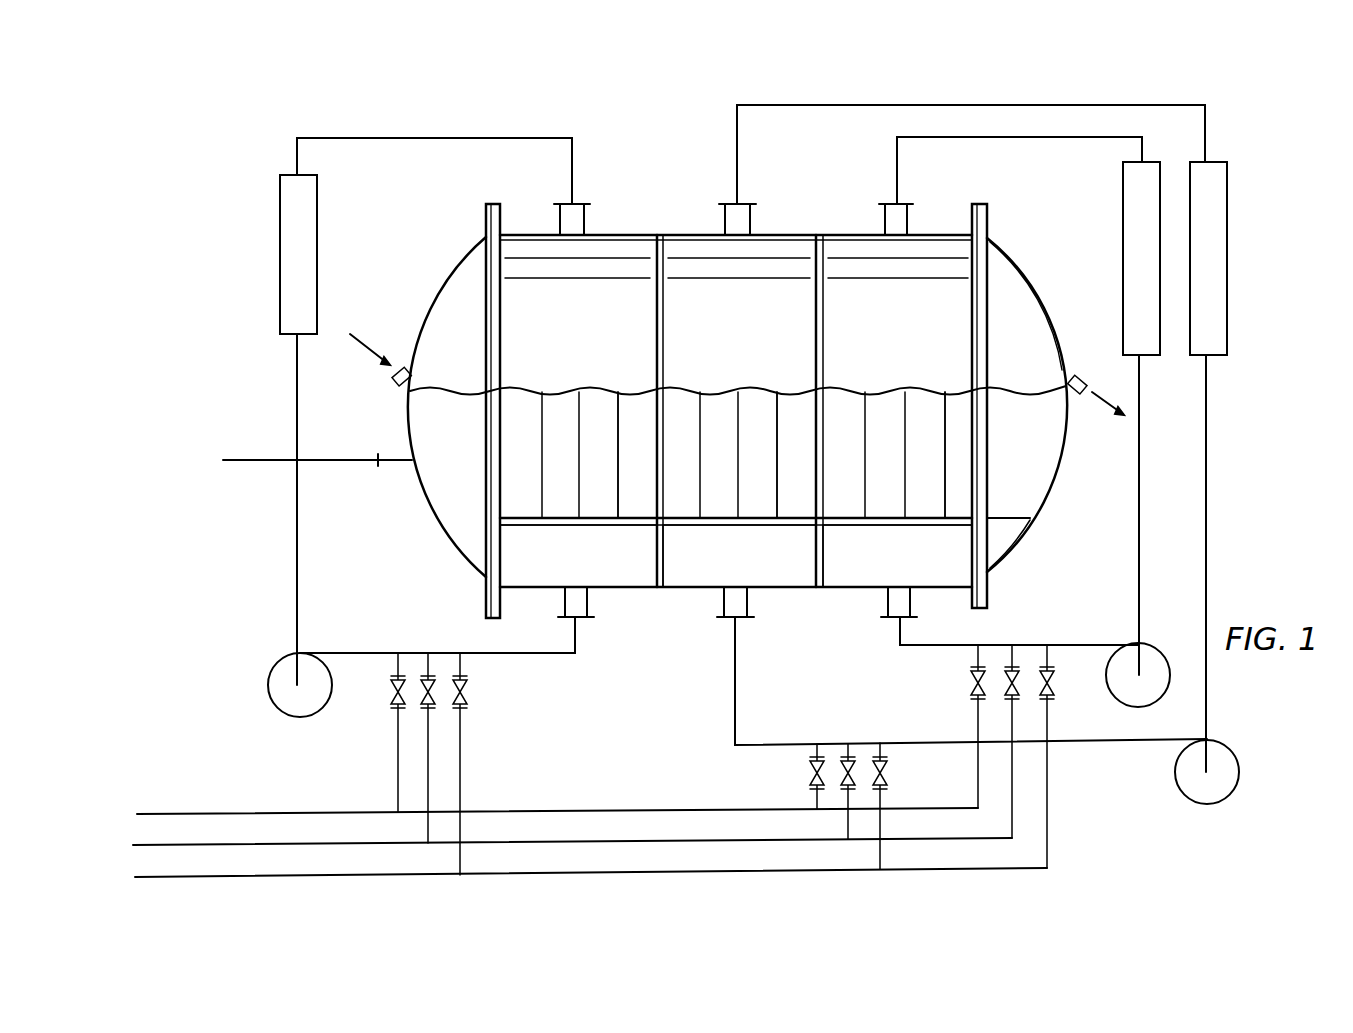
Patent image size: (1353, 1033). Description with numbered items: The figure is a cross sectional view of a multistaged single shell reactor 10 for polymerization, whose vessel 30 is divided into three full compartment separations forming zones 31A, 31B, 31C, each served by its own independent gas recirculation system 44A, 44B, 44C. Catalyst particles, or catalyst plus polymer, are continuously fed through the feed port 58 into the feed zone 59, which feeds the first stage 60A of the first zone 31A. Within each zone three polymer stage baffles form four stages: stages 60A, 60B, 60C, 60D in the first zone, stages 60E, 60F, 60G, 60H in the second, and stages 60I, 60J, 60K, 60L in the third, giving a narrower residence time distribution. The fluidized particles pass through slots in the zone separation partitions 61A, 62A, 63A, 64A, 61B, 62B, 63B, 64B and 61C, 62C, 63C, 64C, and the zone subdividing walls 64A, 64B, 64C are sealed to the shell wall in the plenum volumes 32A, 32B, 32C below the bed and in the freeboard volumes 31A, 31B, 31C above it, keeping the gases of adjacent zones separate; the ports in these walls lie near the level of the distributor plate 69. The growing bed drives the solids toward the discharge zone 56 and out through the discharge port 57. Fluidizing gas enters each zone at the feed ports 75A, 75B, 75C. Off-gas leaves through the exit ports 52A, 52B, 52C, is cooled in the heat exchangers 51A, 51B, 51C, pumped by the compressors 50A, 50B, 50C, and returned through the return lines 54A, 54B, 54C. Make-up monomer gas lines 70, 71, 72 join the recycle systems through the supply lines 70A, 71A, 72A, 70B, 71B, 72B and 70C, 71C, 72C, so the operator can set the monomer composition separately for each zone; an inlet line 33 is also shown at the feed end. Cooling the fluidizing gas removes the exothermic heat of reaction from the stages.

The single shell reactor 10 is at (200, 310).
The vessel 30 is at (432, 302).
The first zone 31A is at (548, 331).
The second zone 31B is at (706, 331).
The third zone 31C is at (874, 331).
The plenum volume 32A is at (548, 566).
The plenum volume 32B is at (726, 566).
The plenum volume 32C is at (874, 566).
The inlet line 33 is at (234, 458).
The gas recirculation system 44A is at (295, 161).
The gas recirculation system 44B is at (810, 105).
The gas recirculation system 44C is at (1145, 518).
The compressor 50A is at (276, 682).
The compressor 50B is at (1124, 685).
The compressor 50C is at (1180, 768).
The heat exchanger 51A is at (280, 237).
The heat exchanger 51B is at (1227, 294).
The heat exchanger 51C is at (1123, 228).
The exit port 52A is at (586, 218).
The exit port 52B is at (750, 214).
The exit port 52C is at (907, 214).
The return line A 54A is at (412, 138).
The return line B 54B is at (908, 108).
The return line C 54C is at (1054, 137).
The discharge zone 56 is at (1007, 439).
The discharge port 57 is at (1080, 400).
The feed port 58 is at (397, 383).
The feed zone 59 is at (434, 434).
The first stage 60A is at (507, 426).
The reaction stage 60B is at (546, 426).
The reaction stage 60C is at (584, 426).
The reaction stage 60D is at (623, 426).
The reaction stage 60E is at (667, 426).
The reaction stage 60F is at (705, 426).
The reaction stage 60G is at (744, 426).
The reaction stage 60H is at (783, 426).
The reaction stage 60I is at (830, 426).
The reaction stage 60J is at (871, 426).
The reaction stage 60K is at (911, 426).
The reaction stage 60L is at (946, 426).
The separation partition 61A is at (538, 477).
The separation partition 62A is at (577, 477).
The separation partition 63A is at (615, 477).
The zone subdividing wall 64A is at (654, 477).
The separation partition 61B is at (698, 477).
The separation partition 62B is at (736, 477).
The separation partition 63B is at (775, 477).
The zone subdividing wall 64B is at (814, 477).
The separation partition 61C is at (861, 477).
The separation partition 62C is at (902, 477).
The separation partition 63C is at (942, 477).
The zone subdividing wall 64C is at (972, 477).
The distributor plate 69 is at (950, 525).
The make up monomer gas line 70 is at (152, 814).
The make up monomer gas line 71 is at (149, 845).
The make up monomer gas line 72 is at (149, 877).
The supply line 70A is at (396, 716).
The supply line 71A is at (426, 711).
The supply line 72A is at (456, 715).
The supply line 70B is at (814, 797).
The supply line 71B is at (846, 824).
The supply line 72B is at (878, 854).
The supply line 70C is at (977, 765).
The supply line 71C is at (1010, 807).
The supply line 72C is at (1044, 827).
The fluidizing gas feed port 75A is at (602, 606).
The fluidizing gas feed port 75B is at (762, 606).
The fluidizing gas feed port 75C is at (882, 602).